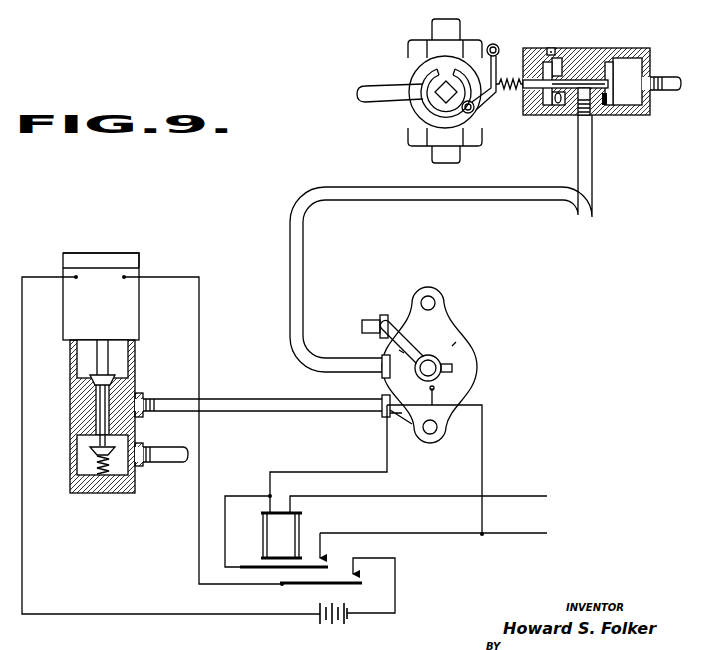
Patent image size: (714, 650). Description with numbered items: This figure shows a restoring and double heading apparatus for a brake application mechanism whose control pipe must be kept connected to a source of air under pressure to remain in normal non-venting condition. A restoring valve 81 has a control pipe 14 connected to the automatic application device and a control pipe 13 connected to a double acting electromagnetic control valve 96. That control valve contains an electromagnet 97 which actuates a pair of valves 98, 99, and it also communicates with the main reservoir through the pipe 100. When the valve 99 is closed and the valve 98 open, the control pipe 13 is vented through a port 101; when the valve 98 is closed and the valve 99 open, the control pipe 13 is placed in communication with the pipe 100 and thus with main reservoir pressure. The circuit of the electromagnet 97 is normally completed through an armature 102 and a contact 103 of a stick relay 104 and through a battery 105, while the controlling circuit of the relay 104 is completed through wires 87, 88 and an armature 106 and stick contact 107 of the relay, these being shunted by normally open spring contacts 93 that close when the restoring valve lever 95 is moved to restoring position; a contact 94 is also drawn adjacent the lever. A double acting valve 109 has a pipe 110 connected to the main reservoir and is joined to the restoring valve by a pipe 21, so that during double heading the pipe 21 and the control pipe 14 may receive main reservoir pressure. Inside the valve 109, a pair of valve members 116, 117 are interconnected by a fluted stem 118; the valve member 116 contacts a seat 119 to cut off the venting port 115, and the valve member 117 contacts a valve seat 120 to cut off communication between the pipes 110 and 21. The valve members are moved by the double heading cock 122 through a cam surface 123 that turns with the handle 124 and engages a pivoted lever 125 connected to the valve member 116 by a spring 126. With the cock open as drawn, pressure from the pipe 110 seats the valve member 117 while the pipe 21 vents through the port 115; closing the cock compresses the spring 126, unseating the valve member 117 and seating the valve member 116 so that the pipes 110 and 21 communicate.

The control pipe 13 is at (237, 399).
The control pipe 14 is at (366, 320).
The pipe 21 is at (329, 366).
The restoring valve 81 is at (429, 365).
The wire 87 is at (296, 445).
The wire 88 is at (444, 536).
The spring contacts 93 is at (440, 398).
The contact 94 is at (456, 368).
The restoring valve lever 95 is at (407, 335).
The double acting electromagnetic control valve 96 is at (101, 296).
The electromagnet 97 is at (115, 259).
The valve 98 is at (90, 378).
The valve 99 is at (92, 449).
The pipe 100 is at (170, 460).
The port 101 is at (137, 362).
The armature 102 is at (334, 586).
The contact 103 is at (357, 581).
The stick relay 104 is at (292, 524).
The battery 105 is at (335, 624).
The armature 106 is at (282, 569).
The stick contact 107 is at (326, 553).
The valve 109 is at (615, 50).
The pipe 110 is at (670, 80).
The venting port 115 is at (552, 48).
The valve member 116 is at (549, 108).
The valve member 117 is at (620, 108).
The fluted stem 118 is at (577, 80).
The seat 119 is at (562, 110).
The valve seat 120 is at (606, 108).
The double heading cock 122 is at (418, 76).
The cam surface 123 is at (455, 80).
The handle 124 is at (394, 100).
The pivoted lever 125 is at (480, 96).
The spring 126 is at (515, 78).